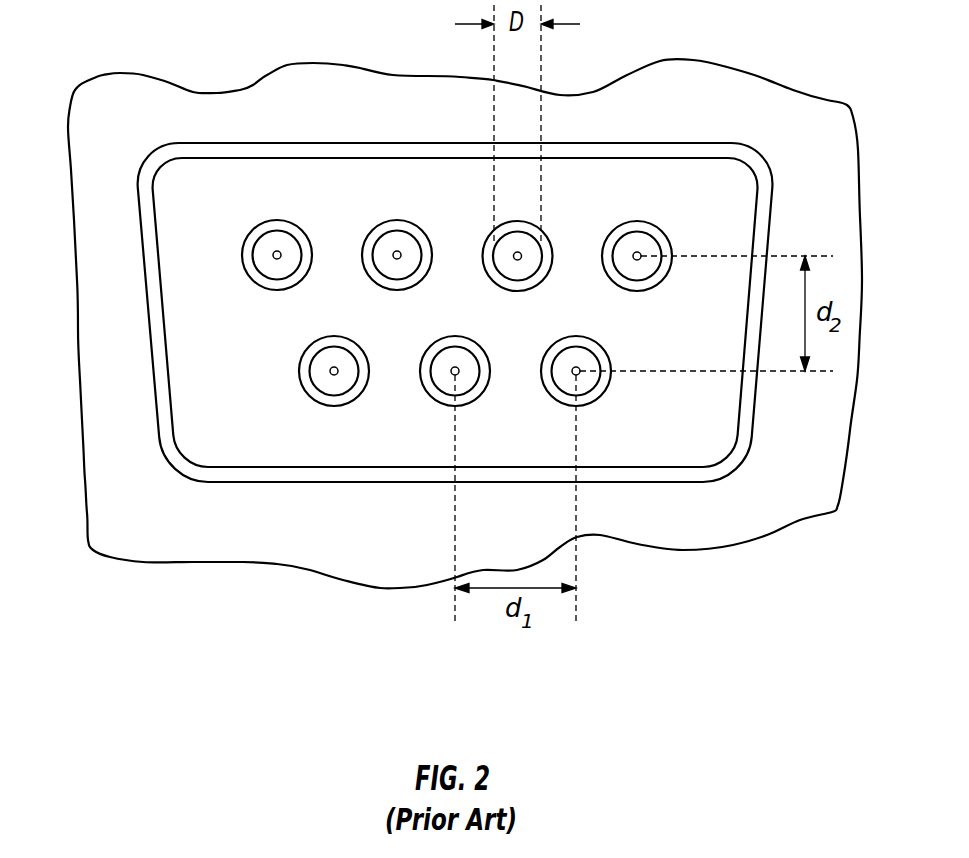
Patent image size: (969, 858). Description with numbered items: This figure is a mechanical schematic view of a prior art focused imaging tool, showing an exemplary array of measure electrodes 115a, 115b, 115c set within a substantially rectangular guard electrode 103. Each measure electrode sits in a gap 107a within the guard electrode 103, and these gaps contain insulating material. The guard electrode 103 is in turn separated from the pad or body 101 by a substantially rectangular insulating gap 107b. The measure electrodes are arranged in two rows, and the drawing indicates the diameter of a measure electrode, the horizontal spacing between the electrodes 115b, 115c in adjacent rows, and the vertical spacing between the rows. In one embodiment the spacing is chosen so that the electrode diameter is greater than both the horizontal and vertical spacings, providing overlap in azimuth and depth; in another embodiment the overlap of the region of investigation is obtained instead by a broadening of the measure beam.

The pad or body 101 is at (808, 494).
The guard electrode 103 is at (688, 452).
The gap 107a is at (638, 221).
The insulating gap 107b is at (233, 483).
The measure electrode 115a is at (276, 251).
The measure electrode 115b is at (396, 251).
The measure electrode 115c is at (333, 367).